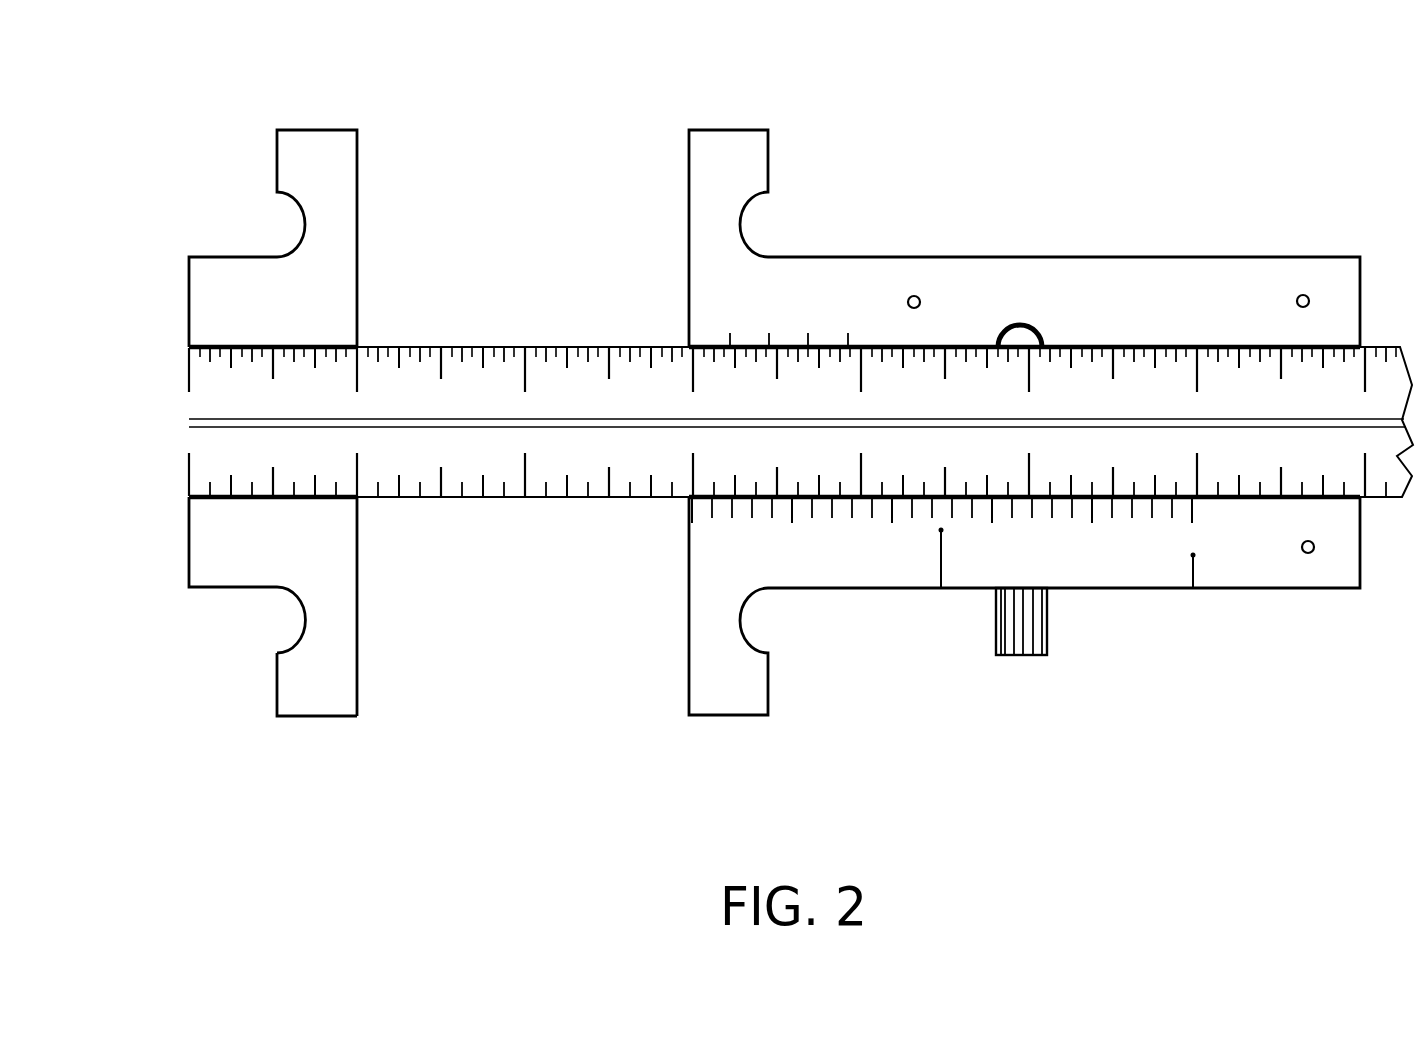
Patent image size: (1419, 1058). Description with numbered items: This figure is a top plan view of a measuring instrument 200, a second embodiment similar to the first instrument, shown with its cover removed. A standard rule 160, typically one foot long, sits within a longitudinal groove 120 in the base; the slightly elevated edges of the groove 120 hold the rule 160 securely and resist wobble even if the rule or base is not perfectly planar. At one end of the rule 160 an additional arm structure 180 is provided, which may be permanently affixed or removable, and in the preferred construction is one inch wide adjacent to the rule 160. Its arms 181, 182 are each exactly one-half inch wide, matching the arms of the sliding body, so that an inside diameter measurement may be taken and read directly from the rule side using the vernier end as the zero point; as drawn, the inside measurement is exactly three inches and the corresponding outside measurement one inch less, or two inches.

The instrument 200 is at (1172, 80).
The longitudinal groove 120 is at (1270, 560).
The rule 160 is at (550, 455).
The arm structure 180 is at (295, 565).
The arm 181 is at (296, 707).
The arm 182 is at (303, 143).